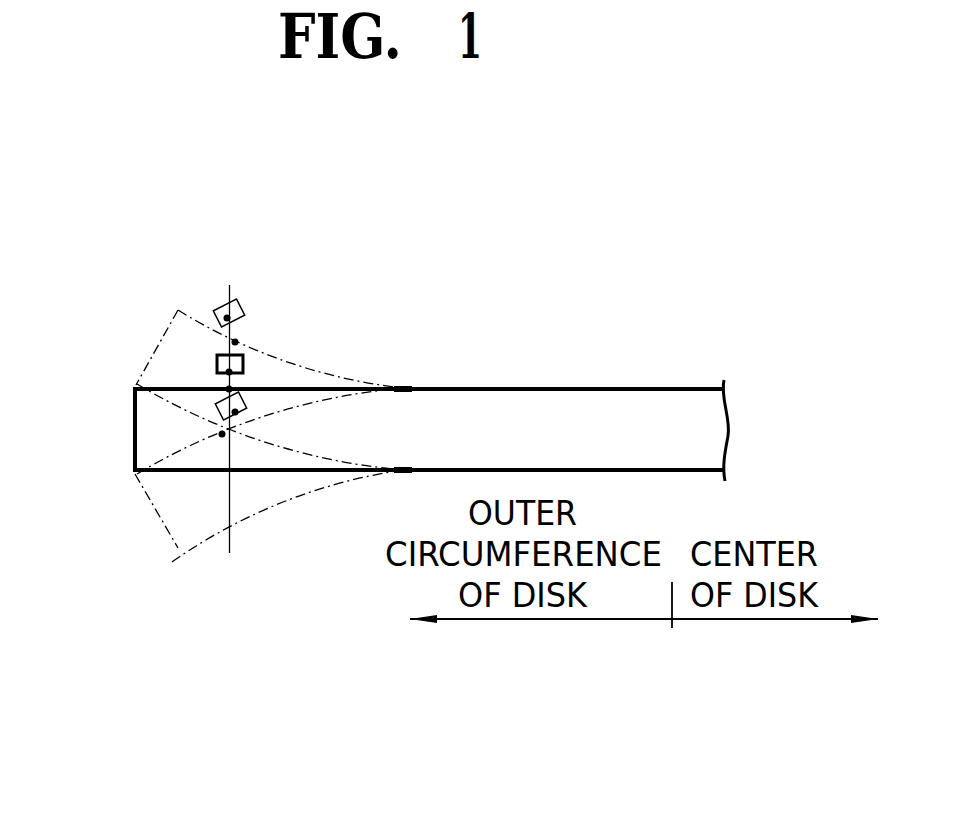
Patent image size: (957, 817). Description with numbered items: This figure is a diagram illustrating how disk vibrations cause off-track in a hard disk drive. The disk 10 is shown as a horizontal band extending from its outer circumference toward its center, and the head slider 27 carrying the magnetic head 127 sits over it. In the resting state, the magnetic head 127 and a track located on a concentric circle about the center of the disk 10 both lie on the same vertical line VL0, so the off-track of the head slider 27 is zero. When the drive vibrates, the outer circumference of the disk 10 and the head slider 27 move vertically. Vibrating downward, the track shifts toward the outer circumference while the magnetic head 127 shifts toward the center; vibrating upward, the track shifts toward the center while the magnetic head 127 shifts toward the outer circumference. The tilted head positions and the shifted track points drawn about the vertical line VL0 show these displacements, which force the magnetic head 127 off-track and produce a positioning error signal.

The disk 10 is at (672, 397).
The head slider 27 is at (243, 363).
The magnetic head 127 is at (202, 401).
The vertical line VL0 is at (230, 500).